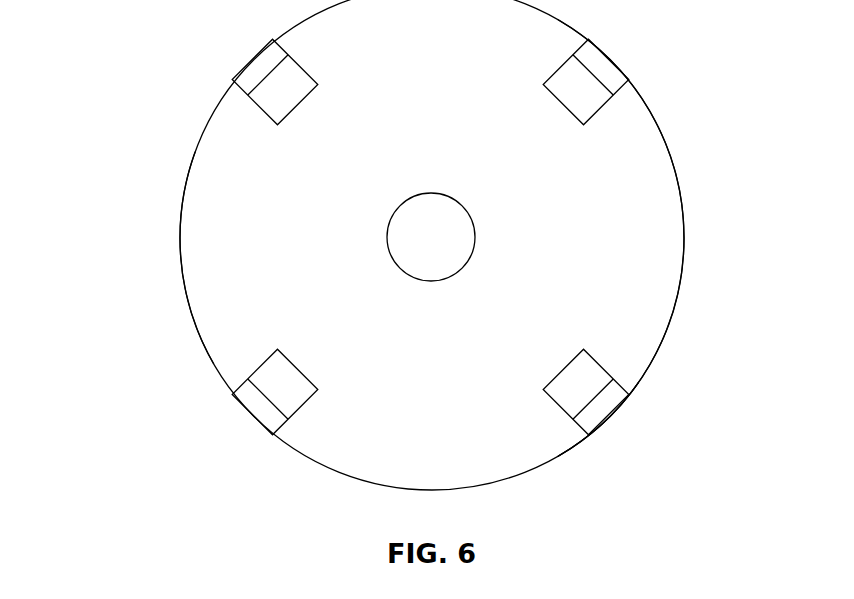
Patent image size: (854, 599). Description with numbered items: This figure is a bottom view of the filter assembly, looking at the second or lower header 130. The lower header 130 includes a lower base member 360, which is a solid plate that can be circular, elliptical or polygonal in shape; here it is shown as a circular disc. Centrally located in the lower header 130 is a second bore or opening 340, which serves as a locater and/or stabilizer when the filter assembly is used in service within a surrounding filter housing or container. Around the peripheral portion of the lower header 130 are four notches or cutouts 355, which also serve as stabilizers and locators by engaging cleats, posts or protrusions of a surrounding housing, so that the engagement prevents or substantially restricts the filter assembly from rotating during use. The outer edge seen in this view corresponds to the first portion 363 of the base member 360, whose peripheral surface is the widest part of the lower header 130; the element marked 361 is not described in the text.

The lower header 130 is at (135, 100).
The second bore or opening 340 is at (447, 232).
The cutouts 355 is at (282, 86).
The lower base member 360 is at (608, 170).
The outer edge 361 is at (182, 293).
The first portion 363 is at (645, 373).